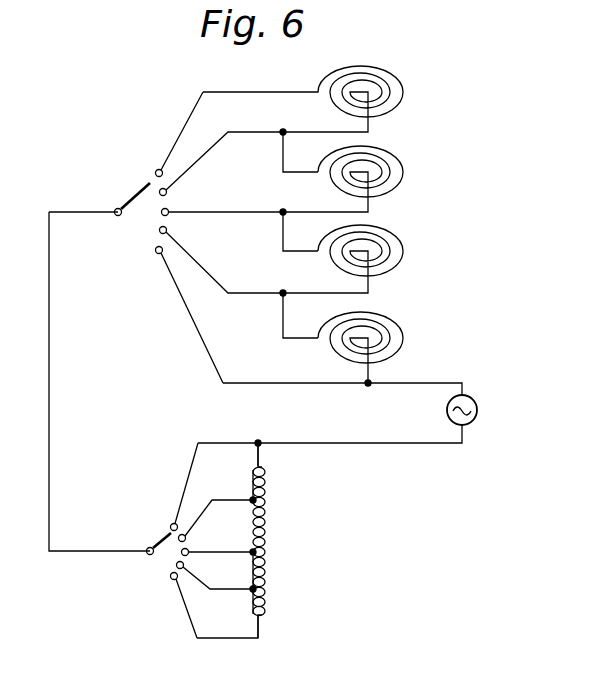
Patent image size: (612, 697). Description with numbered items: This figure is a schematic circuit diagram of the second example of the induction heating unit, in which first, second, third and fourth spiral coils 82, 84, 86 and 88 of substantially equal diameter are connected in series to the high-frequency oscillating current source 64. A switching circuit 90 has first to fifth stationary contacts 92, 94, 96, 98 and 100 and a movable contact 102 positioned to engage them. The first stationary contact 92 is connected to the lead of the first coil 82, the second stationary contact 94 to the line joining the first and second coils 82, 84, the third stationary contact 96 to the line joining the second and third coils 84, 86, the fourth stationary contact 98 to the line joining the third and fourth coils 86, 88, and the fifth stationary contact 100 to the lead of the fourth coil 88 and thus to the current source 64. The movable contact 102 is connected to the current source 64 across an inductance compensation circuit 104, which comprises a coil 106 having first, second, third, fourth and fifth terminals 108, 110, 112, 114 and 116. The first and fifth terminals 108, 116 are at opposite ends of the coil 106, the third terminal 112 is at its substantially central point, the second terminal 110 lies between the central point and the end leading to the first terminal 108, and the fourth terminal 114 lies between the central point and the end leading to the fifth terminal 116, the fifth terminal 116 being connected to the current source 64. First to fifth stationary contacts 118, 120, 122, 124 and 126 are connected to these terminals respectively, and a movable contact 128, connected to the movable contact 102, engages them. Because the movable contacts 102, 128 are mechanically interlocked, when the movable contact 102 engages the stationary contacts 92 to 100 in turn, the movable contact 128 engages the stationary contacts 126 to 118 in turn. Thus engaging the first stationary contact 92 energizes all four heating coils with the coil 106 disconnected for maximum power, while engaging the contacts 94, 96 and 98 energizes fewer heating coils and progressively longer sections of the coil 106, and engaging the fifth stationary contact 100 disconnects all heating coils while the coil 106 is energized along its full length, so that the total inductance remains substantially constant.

The high-frequency oscillating current source 64 is at (478, 411).
The first spiral coil 82 is at (404, 92).
The second spiral coil 84 is at (404, 170).
The third spiral coil 86 is at (404, 249).
The fourth spiral coil 88 is at (404, 336).
The switching circuit 90 is at (137, 175).
The first stationary contact 92 is at (159, 169).
The second stationary contact 94 is at (167, 192).
The third stationary contact 96 is at (168, 215).
The fourth stationary contact 98 is at (160, 231).
The fifth stationary contact 100 is at (158, 252).
The movable contact 102 is at (118, 209).
The inductance compensation circuit 104 is at (151, 520).
The coil 106 is at (266, 520).
The first terminal 108 is at (264, 620).
The second terminal 110 is at (228, 589).
The third terminal 112 is at (221, 552).
The fourth terminal 114 is at (232, 498).
The fifth terminal 116 is at (261, 452).
The first stationary contact 118 is at (173, 579).
The second stationary contact 120 is at (178, 567).
The third stationary contact 122 is at (183, 553).
The fourth stationary contact 124 is at (186, 538).
The fifth stationary contact 126 is at (173, 524).
The movable contact 128 is at (148, 548).